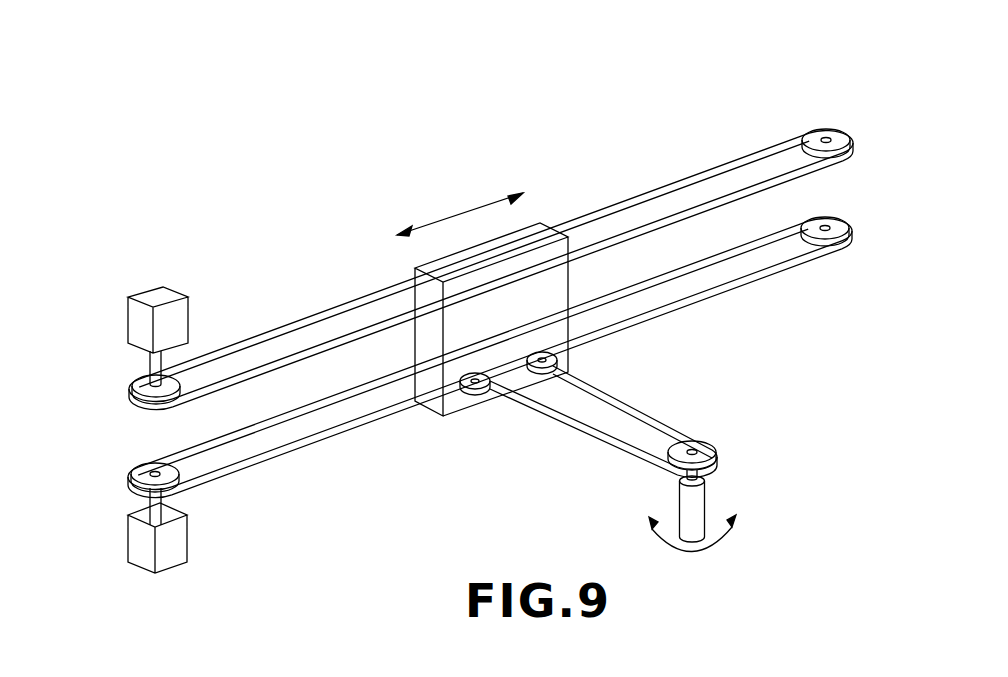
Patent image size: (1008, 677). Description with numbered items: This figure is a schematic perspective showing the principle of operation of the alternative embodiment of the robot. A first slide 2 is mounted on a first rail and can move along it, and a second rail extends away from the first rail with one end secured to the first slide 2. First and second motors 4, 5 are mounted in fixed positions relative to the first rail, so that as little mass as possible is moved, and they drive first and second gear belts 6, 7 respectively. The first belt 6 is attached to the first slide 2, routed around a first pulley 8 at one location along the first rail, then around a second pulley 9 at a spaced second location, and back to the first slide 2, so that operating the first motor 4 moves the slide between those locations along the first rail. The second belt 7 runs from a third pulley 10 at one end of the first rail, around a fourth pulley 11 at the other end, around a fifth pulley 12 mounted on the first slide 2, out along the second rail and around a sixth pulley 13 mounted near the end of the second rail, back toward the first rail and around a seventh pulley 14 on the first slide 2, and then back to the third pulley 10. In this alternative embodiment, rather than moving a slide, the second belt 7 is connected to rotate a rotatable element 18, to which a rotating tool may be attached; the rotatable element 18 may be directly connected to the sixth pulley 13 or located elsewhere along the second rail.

The first slide 2 is at (555, 267).
The first motor 4 is at (156, 296).
The second motor 5 is at (175, 541).
The first gear belt 6 is at (363, 297).
The second gear belt 7 is at (364, 418).
The first pulley 8 is at (140, 386).
The second pulley 9 is at (831, 130).
The third pulley 10 is at (140, 472).
The fourth pulley 11 is at (830, 222).
The fifth pulley 12 is at (552, 361).
The sixth pulley 13 is at (697, 452).
The seventh pulley 14 is at (468, 392).
The rotatable element 18 is at (712, 508).